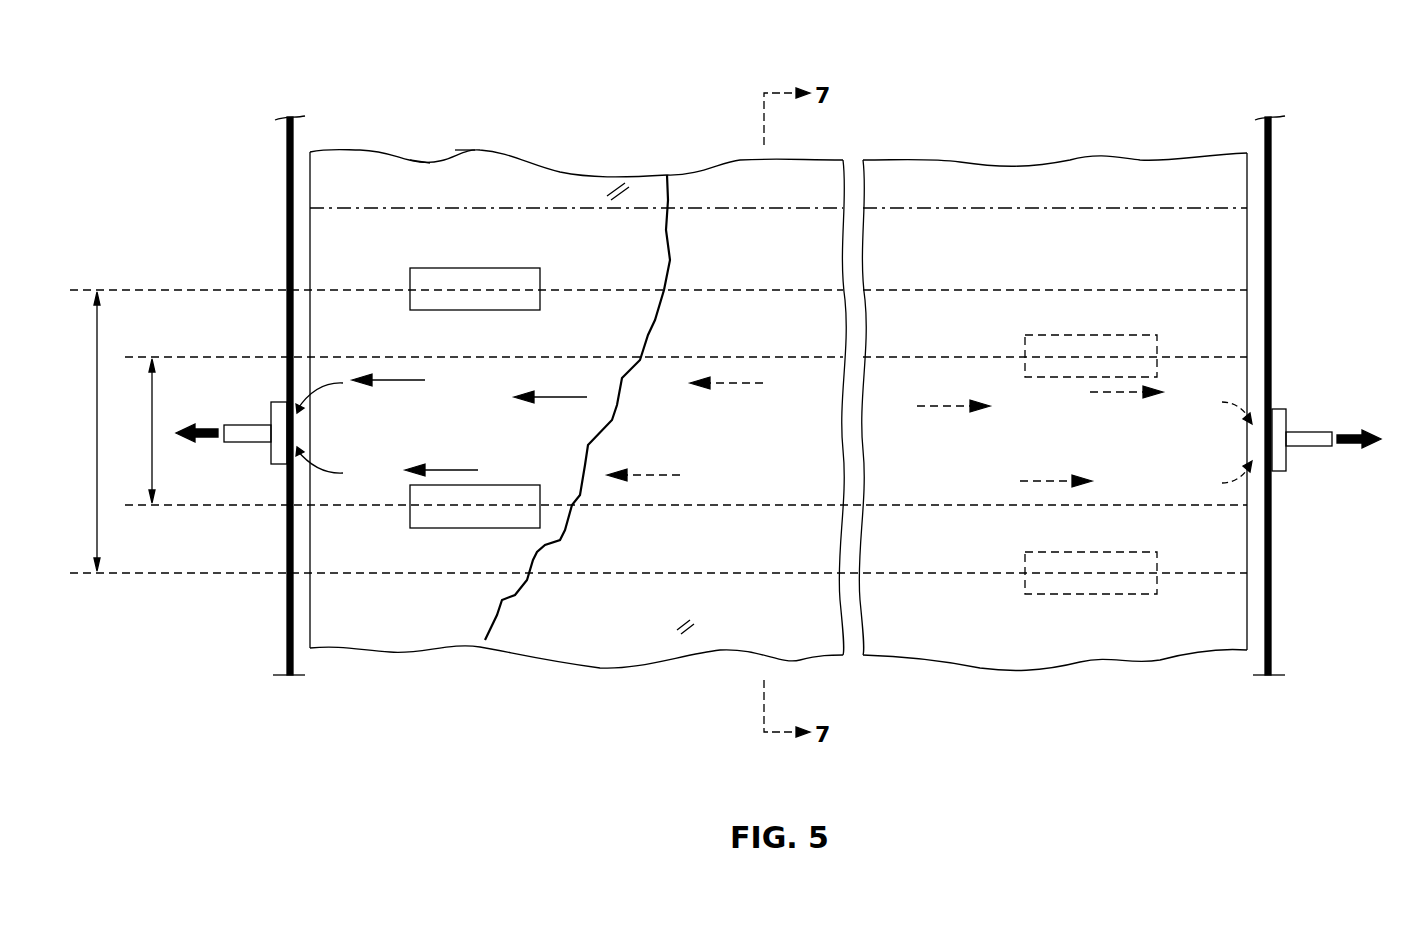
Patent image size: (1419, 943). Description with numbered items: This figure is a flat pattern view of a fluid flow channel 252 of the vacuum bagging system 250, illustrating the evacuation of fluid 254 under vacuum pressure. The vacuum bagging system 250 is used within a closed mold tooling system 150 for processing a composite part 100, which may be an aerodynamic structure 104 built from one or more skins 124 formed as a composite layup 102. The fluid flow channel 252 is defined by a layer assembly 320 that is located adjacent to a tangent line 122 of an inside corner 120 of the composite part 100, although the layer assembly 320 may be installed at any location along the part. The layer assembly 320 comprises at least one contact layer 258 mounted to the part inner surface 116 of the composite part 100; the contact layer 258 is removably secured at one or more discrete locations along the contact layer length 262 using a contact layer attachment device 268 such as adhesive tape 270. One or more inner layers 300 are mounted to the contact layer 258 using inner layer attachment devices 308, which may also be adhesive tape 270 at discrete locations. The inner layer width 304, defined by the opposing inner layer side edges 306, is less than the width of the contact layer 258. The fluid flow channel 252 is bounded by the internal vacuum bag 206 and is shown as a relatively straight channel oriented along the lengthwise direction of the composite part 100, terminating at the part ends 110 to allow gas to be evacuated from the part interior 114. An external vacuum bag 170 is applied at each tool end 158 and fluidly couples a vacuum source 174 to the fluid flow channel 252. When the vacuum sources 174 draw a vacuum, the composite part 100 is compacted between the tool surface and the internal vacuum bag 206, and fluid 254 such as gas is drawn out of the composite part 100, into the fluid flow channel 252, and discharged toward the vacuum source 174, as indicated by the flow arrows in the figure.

The composite part 100 is at (392, 155).
The composite layup 102 is at (418, 162).
The aerodynamic structure 104 is at (463, 150).
The part end 110 is at (310, 150).
The part interior 114 is at (352, 150).
The part inner surface 116 is at (615, 186).
The inside corner 120 is at (583, 180).
The tangent line 122 is at (572, 208).
The skin 124 is at (688, 163).
The closed mold tooling system 150 is at (285, 155).
The tool end 158 is at (316, 648).
The external vacuum bag 170 is at (286, 633).
The vacuum source 174 is at (199, 433).
The internal vacuum bag 206 is at (688, 636).
The vacuum bagging system 250 is at (917, 655).
The fluid flow channel 252 is at (357, 505).
The fluid 254 is at (372, 380).
The contact layer 258 is at (425, 573).
The contact layer length 262 is at (97, 433).
The contact layer attachment device 268 is at (447, 272).
The adhesive tape 270 is at (503, 265).
The inner layer 300 is at (383, 505).
The inner layer width 304 is at (152, 415).
The inner layer side edge 306 is at (557, 505).
The inner layer attachment device 308 is at (500, 528).
The layer assembly 320 is at (333, 487).